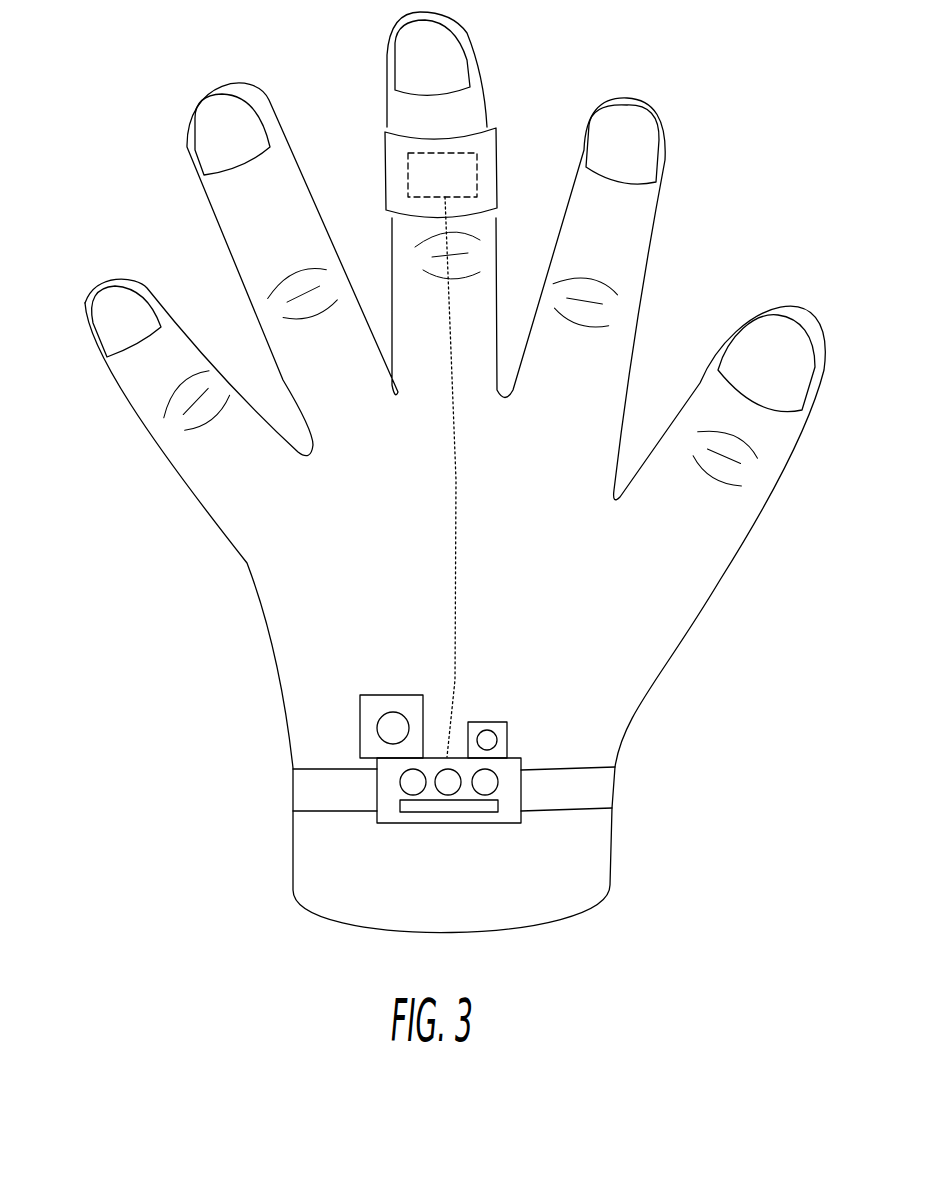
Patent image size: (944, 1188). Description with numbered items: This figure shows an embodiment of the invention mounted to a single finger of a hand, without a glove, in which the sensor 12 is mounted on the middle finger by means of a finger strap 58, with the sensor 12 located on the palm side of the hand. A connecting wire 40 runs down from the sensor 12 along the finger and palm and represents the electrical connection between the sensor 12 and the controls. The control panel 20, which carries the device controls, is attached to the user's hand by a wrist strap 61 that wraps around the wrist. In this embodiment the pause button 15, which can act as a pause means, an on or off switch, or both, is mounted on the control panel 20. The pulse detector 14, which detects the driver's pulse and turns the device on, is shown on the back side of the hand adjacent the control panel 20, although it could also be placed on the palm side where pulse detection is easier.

The sensor 12 is at (431, 172).
The pulse detector 14 is at (363, 720).
The pause button 15 is at (510, 737).
The control panel 20 is at (540, 821).
The connecting wire 40 is at (455, 573).
The finger strap 58 is at (497, 161).
The wrist strap 61 is at (292, 784).